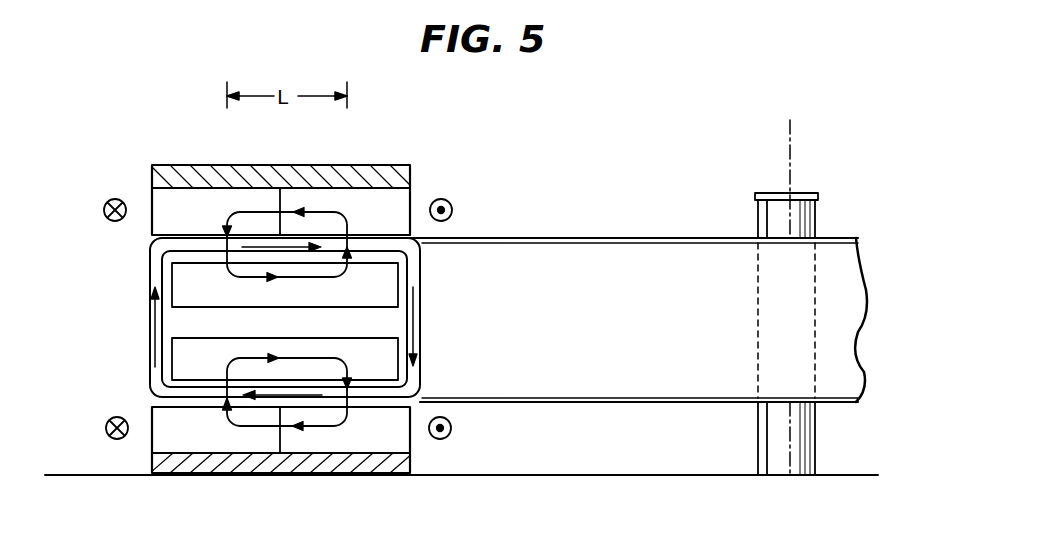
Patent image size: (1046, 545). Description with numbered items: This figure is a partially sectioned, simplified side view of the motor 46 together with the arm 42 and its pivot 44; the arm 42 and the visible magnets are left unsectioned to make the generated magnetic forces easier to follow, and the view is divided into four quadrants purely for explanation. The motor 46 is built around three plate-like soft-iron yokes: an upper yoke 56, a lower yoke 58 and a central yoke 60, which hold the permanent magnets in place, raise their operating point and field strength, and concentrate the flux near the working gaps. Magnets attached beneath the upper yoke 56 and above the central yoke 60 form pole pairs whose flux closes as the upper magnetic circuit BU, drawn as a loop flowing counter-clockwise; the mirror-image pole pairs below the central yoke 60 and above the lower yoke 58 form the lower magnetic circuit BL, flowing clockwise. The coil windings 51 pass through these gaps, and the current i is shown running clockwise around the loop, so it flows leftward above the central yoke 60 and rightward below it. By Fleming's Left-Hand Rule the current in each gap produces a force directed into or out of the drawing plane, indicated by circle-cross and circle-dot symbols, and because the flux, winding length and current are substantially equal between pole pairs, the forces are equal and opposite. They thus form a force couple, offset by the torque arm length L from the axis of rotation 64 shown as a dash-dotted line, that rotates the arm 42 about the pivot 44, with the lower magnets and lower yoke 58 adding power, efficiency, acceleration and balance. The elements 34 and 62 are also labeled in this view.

The base 34 is at (457, 454).
The arm 42 is at (638, 304).
The pivot 44 is at (770, 317).
The motor 46 is at (261, 321).
The windings 51 is at (262, 317).
The upper yoke 56 is at (281, 181).
The lower yoke 58 is at (281, 464).
The central yoke 60 is at (318, 353).
The upper magnet 62 is at (319, 280).
The axis of rotation 64 is at (756, 297).
The upper magnetic circuit BU is at (287, 200).
The lower magnetic circuit BL is at (287, 442).